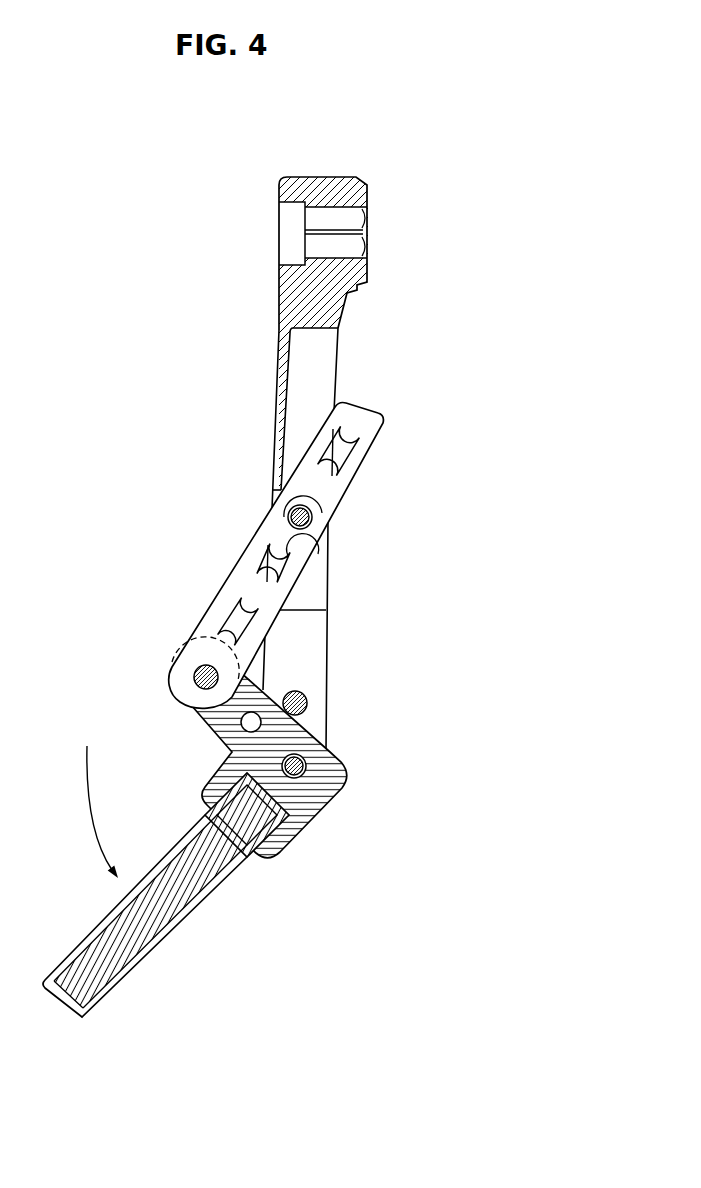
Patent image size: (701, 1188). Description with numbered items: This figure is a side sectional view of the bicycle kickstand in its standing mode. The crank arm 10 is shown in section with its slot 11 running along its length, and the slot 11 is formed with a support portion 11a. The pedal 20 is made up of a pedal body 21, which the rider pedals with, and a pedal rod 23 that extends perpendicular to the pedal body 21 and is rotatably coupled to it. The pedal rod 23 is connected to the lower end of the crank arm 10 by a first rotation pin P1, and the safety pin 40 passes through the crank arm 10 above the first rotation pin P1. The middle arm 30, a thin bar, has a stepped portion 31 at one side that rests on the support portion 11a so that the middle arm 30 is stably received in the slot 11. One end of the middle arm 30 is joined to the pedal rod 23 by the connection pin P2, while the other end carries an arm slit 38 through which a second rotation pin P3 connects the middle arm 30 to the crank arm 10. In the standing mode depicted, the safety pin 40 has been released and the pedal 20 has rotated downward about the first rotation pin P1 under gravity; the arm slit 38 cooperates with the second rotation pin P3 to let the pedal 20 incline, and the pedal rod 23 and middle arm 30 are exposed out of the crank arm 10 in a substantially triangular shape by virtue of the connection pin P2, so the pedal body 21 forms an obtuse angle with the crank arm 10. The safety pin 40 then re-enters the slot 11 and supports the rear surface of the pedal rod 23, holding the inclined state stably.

The crank arm 10 is at (331, 188).
The slot 11 is at (305, 539).
The support portion 11a is at (272, 494).
The pedal 20 is at (209, 840).
The pedal body 21 is at (180, 930).
The pedal rod 23 is at (300, 822).
The middle arm 30 is at (244, 556).
The stepped portion 31 is at (262, 531).
The arm slit 38 is at (288, 546).
The safety pin 40 is at (307, 703).
The first rotation pin P1 is at (307, 767).
The connection pin P2 is at (194, 676).
The second rotation pin P3 is at (313, 520).